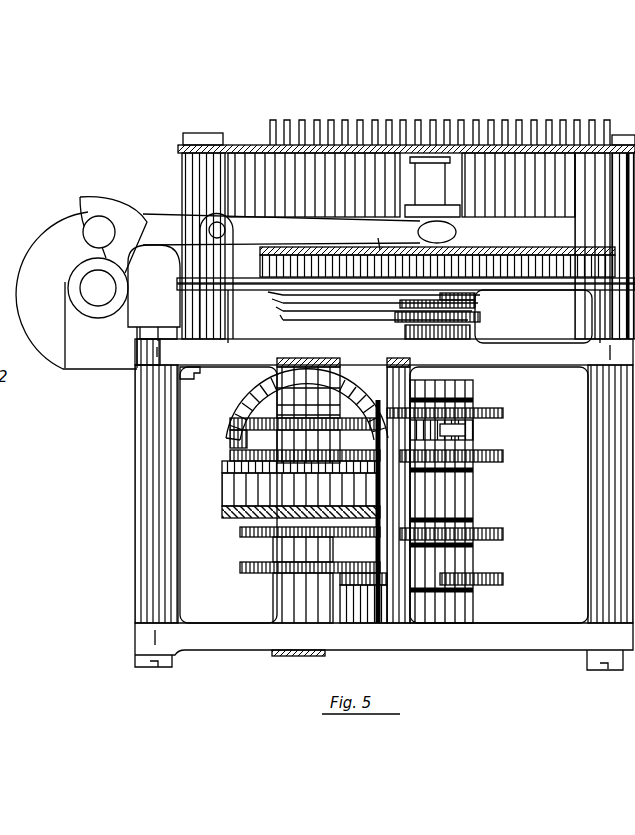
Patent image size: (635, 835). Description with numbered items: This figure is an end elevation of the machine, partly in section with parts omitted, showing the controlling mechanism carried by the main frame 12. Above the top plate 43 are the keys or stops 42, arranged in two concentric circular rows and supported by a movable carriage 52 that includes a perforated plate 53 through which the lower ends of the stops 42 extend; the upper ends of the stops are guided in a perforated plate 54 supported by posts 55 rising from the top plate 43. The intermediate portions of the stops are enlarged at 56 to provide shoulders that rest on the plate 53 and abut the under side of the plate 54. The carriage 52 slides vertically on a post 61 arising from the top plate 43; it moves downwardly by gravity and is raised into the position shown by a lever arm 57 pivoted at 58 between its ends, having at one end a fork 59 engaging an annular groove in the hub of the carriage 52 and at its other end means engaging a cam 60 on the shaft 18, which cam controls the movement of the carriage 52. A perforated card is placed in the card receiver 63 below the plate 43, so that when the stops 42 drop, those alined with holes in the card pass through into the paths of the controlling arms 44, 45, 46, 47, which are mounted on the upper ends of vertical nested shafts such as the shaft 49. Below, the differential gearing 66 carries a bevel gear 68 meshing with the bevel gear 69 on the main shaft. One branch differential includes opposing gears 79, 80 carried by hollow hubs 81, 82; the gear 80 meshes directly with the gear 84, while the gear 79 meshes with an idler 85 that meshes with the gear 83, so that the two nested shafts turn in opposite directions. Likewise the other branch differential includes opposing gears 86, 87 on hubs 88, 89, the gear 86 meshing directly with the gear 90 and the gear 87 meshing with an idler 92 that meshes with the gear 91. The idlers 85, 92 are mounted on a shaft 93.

The main frame 12 is at (518, 358).
The shaft 18 is at (98, 288).
The keys or stops 42 is at (408, 125).
The top plate 43 is at (248, 284).
The controlling arm 44 is at (268, 296).
The controlling arm 45 is at (275, 303).
The controlling arm 46 is at (280, 311).
The controlling arm 47 is at (283, 320).
The vertically extending shaft 49 is at (455, 493).
The movable carriage 52 is at (377, 235).
The perforated plate 53 is at (305, 247).
The perforated plate 54 is at (268, 145).
The posts 55 is at (190, 164).
The enlarged portions 56 is at (595, 163).
The lever arm 57 is at (165, 218).
The pivot 58 is at (225, 232).
The fork 59 is at (437, 232).
The cam 60 is at (107, 203).
The post 61 is at (458, 279).
The card slot or receiver 63 is at (176, 285).
The differential gearing 66 is at (240, 480).
The bevel gear 68 is at (230, 512).
The bevel gear 69 is at (230, 424).
The opposing gear 79 is at (286, 565).
The opposing gear 80 is at (275, 549).
The hollow shaft section or hub 81 is at (285, 605).
The hollow shaft section or hub 82 is at (320, 549).
The gear 83 is at (480, 585).
The gear 84 is at (490, 540).
The idler 85 is at (363, 604).
The opposing gear 86 is at (240, 455).
The opposing gear 87 is at (230, 438).
The hollow shaft section or hub 88 is at (285, 438).
The hollow shaft section or hub 89 is at (240, 398).
The gear 90 is at (503, 456).
The gear 91 is at (500, 410).
The idler 92 is at (470, 430).
The shaft 93 is at (385, 620).